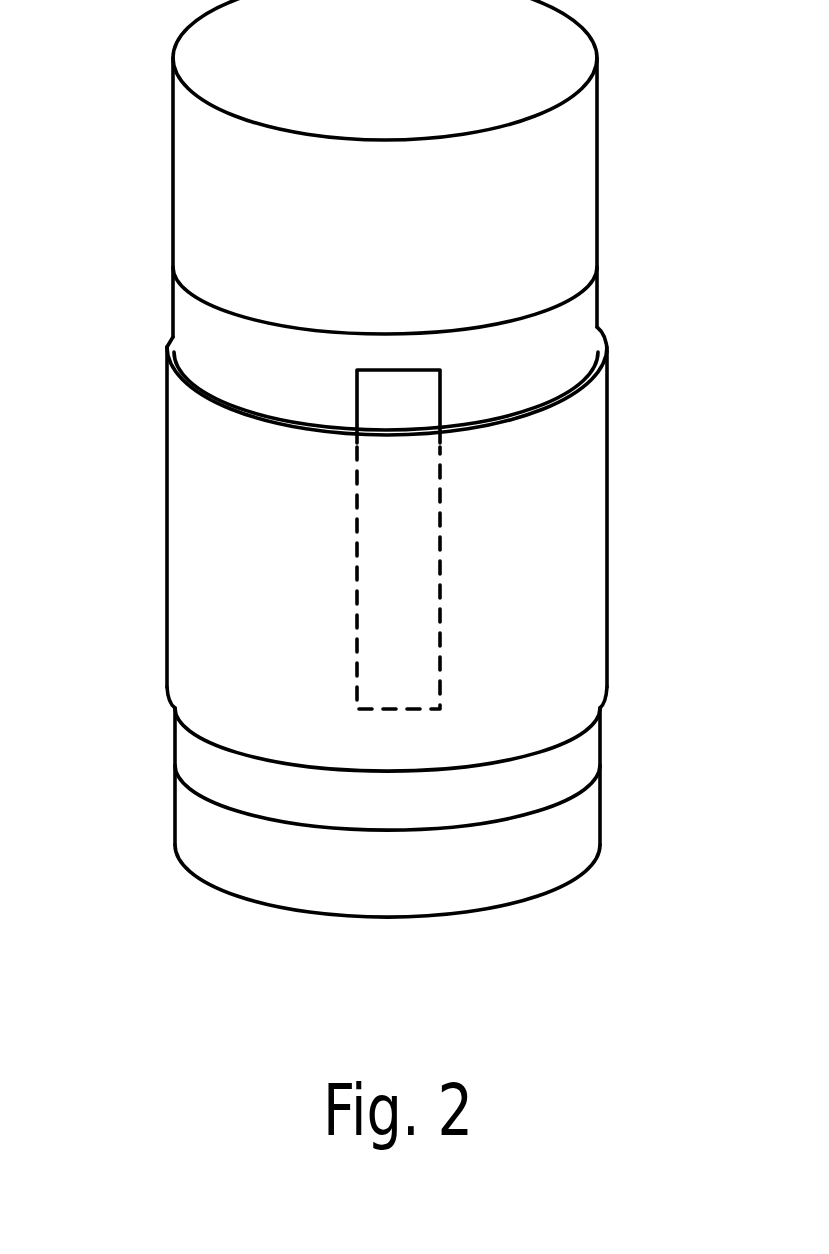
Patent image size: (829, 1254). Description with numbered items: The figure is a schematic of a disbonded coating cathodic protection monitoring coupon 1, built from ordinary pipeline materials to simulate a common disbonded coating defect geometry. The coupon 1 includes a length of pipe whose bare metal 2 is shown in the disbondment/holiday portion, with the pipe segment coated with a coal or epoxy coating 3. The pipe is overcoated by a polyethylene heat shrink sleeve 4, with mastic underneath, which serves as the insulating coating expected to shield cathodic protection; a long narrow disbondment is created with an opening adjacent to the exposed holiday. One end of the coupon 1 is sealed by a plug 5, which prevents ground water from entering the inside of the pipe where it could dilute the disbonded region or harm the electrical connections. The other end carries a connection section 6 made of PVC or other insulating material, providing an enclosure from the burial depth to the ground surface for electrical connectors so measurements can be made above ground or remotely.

The coupon 1 is at (390, 458).
The bare metal 2 is at (407, 402).
The epoxy coating 3 is at (582, 322).
The polyethylene heat shrink sleeve 4 is at (607, 602).
The plug 5 is at (583, 822).
The connection section 6 is at (572, 160).